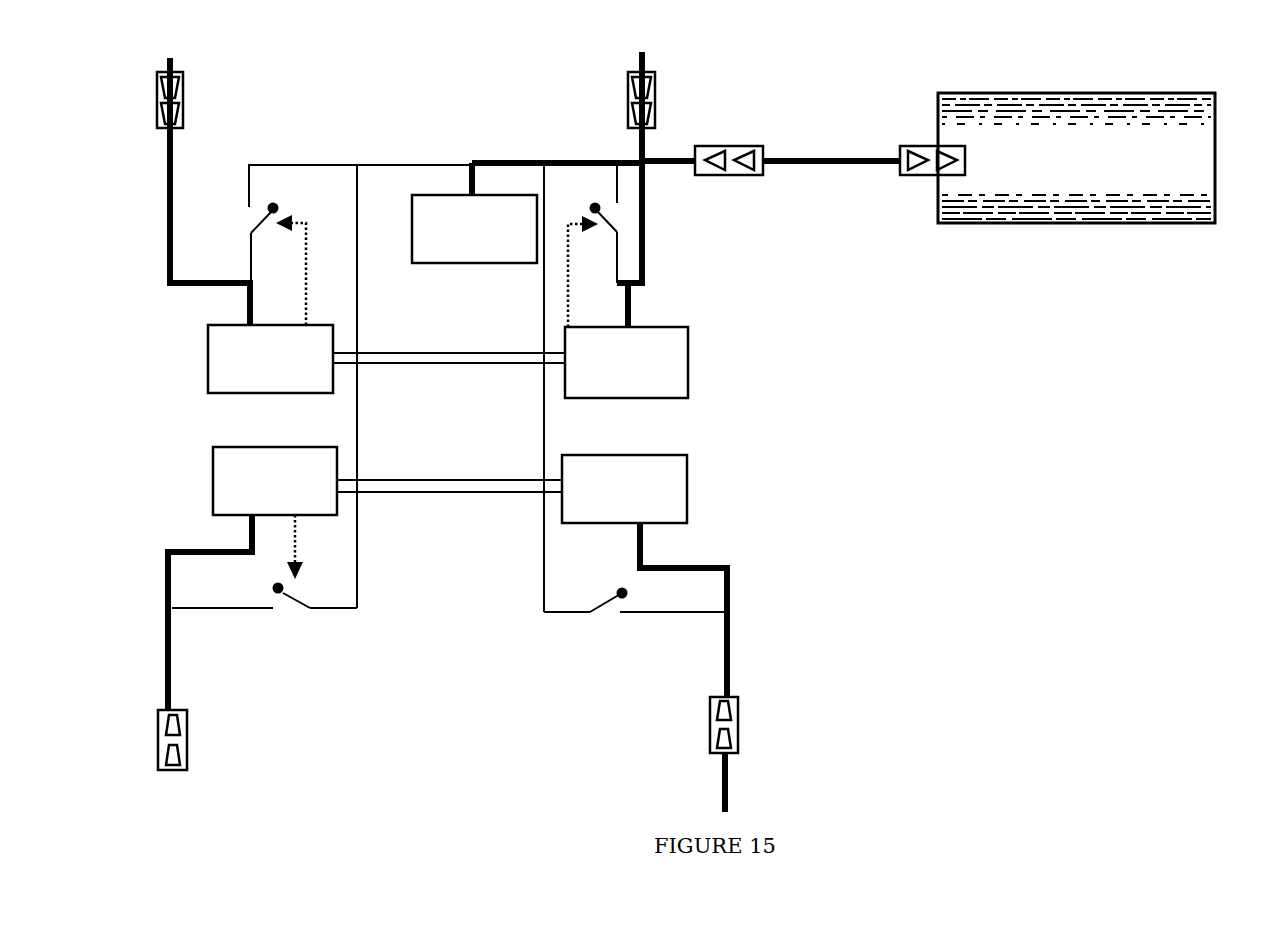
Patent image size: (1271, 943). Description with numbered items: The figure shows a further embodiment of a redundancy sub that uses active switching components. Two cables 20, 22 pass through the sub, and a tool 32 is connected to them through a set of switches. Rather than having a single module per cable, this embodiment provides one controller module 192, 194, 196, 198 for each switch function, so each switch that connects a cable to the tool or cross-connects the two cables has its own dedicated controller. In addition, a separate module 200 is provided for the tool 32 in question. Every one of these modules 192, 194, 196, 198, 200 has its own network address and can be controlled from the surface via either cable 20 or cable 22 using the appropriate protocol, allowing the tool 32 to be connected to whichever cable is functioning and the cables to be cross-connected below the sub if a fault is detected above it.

The cable 20 is at (182, 152).
The cable 22 is at (665, 120).
The tool 32 is at (1076, 158).
The controller module 192 is at (270, 359).
The controller module 194 is at (626, 362).
The controller module 196 is at (275, 481).
The controller module 198 is at (624, 489).
The module for the tool 200 is at (474, 229).